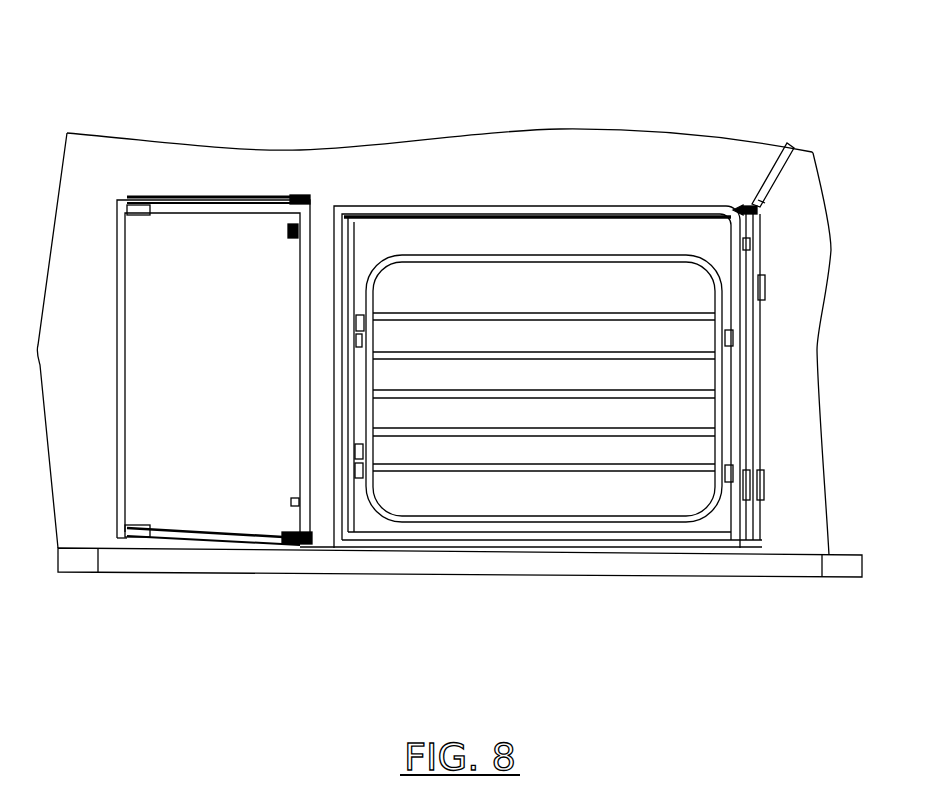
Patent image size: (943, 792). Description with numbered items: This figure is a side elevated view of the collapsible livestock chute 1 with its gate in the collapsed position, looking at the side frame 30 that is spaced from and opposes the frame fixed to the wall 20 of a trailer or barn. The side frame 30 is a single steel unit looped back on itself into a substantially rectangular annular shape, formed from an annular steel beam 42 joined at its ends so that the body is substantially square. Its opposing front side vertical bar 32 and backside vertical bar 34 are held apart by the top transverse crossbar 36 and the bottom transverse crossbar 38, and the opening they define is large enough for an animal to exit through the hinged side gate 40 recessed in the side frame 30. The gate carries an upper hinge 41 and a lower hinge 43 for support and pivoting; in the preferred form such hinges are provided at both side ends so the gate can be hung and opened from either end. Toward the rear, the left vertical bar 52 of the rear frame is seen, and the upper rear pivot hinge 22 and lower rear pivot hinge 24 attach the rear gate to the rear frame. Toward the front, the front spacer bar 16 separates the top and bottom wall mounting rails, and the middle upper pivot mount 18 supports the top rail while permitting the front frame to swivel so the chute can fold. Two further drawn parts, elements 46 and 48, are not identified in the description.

The collapsible livestock chute 1 is at (592, 357).
The front spacer bar 16 is at (186, 367).
The middle upper pivot mount 18 is at (313, 203).
The wall 20 is at (408, 173).
The upper rear pivot hinge 22 is at (767, 285).
The lower rear pivot hinge 24 is at (762, 492).
The side frame 30 is at (590, 217).
The front side vertical bar 32 is at (353, 495).
The backside vertical bar 34 is at (733, 380).
The top transverse crossbar 36 is at (609, 357).
The bottom transverse crossbar 38 is at (558, 535).
The hinged side gate 40 is at (544, 339).
The upper hinge 41 is at (745, 265).
The annular steel beam 42 is at (457, 470).
The lower hinge 43 is at (748, 468).
The upper latch 46 is at (733, 337).
The lower latch 48 is at (728, 482).
The left vertical bar 52 is at (755, 240).